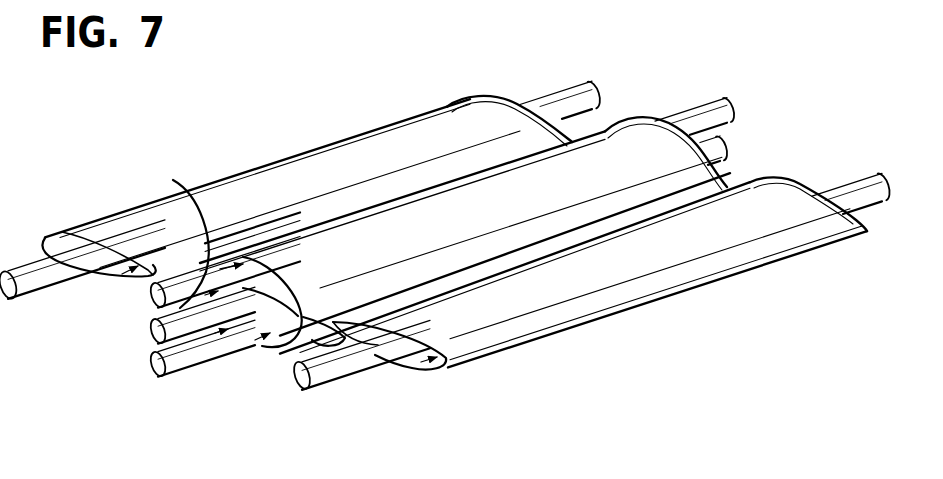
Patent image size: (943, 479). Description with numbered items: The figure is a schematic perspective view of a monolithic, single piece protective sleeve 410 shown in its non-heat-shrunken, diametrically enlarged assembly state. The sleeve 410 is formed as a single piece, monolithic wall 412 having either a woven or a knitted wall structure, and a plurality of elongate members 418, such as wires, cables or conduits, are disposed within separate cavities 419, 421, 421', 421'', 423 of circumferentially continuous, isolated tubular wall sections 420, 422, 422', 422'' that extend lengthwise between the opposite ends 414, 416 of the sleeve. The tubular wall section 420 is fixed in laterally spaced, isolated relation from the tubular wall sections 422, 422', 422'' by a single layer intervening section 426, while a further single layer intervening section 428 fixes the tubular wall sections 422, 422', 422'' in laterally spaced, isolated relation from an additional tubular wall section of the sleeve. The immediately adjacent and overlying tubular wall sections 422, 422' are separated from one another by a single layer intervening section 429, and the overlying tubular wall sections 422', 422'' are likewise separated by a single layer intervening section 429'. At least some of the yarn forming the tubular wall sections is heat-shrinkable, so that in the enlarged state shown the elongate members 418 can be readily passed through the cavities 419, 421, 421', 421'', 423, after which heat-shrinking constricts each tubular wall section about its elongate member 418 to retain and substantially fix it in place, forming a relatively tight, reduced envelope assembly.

The sleeve 410 is at (218, 142).
The wall 412 is at (318, 142).
The end 414 is at (445, 368).
The end 416 is at (863, 233).
The elongate member 418 is at (23, 256).
The cavity 419 is at (122, 274).
The tubular wall section 420 is at (407, 140).
The cavity 421 is at (162, 238).
The cavity 421' is at (195, 253).
The cavity 421'' is at (224, 369).
The tubular wall section 422 is at (463, 175).
The tubular wall section 422' is at (299, 232).
The tubular wall section 422'' is at (262, 391).
The cavity 423 is at (400, 367).
The single layer intervening section 426 is at (477, 170).
The single layer intervening section 428 is at (697, 200).
The single layer intervening section 429 is at (321, 290).
The single layer intervening section 429' is at (330, 372).